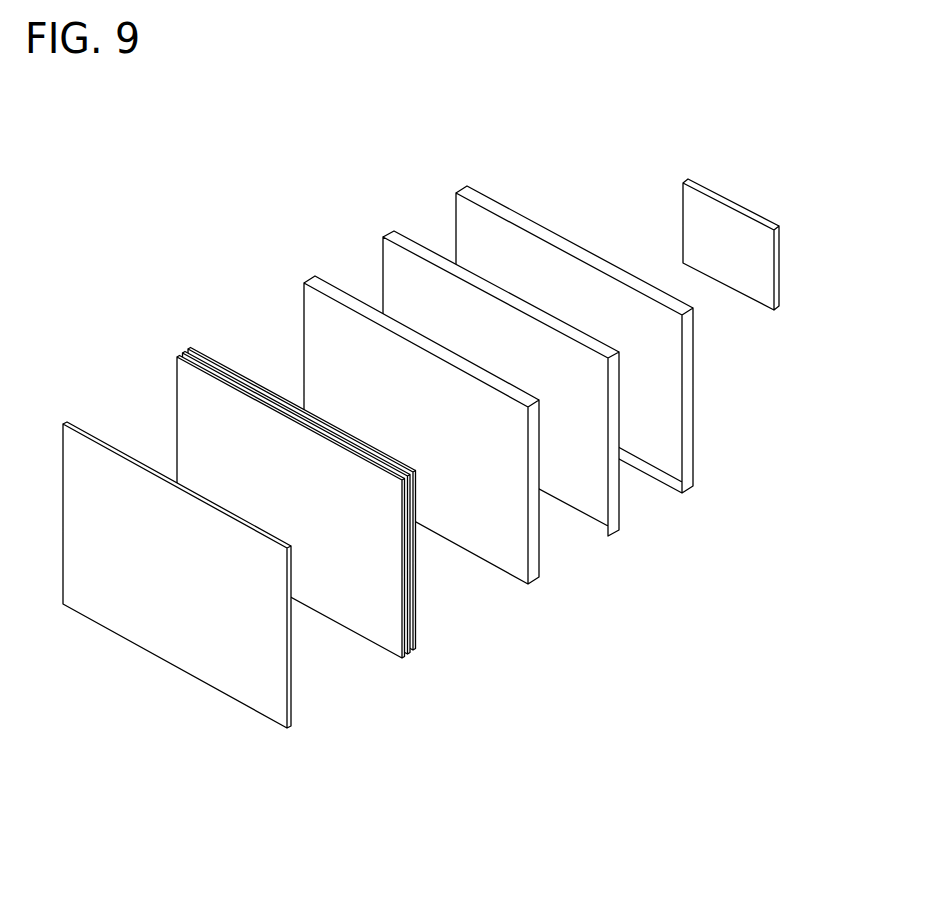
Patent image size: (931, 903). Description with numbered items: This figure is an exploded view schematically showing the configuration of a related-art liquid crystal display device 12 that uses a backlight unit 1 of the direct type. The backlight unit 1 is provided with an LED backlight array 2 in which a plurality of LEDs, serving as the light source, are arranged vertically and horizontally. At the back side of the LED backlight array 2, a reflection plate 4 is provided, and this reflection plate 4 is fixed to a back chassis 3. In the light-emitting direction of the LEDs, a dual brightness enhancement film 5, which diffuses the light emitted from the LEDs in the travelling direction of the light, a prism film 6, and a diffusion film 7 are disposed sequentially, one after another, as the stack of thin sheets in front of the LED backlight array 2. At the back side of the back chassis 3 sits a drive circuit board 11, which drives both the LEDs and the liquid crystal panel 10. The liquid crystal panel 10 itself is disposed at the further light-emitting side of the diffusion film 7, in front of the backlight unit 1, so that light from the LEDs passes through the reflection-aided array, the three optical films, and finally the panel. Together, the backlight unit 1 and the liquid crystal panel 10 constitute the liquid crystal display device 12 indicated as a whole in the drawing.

The backlight unit 1 is at (769, 509).
The LED backlight array 2 is at (536, 523).
The back chassis 3 is at (691, 455).
The reflection plate 4 is at (615, 482).
The dual brightness enhancement film 5 is at (415, 613).
The prism film 6 is at (411, 641).
The diffusion film 7 is at (404, 630).
The liquid crystal panel 10 is at (208, 662).
The drive circuit board 11 is at (747, 275).
The liquid crystal display device 12 is at (322, 209).